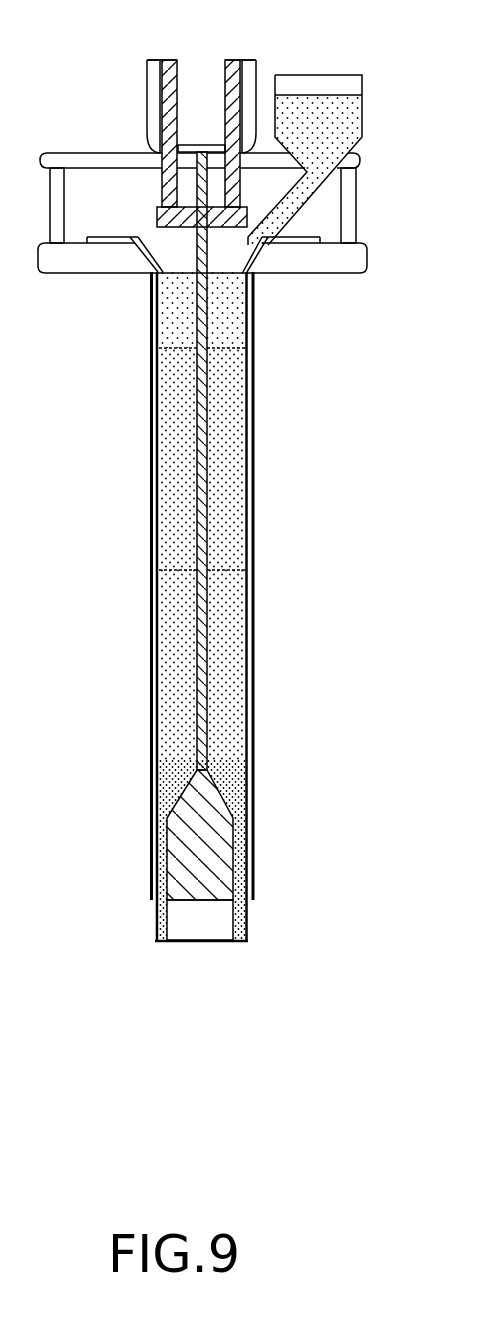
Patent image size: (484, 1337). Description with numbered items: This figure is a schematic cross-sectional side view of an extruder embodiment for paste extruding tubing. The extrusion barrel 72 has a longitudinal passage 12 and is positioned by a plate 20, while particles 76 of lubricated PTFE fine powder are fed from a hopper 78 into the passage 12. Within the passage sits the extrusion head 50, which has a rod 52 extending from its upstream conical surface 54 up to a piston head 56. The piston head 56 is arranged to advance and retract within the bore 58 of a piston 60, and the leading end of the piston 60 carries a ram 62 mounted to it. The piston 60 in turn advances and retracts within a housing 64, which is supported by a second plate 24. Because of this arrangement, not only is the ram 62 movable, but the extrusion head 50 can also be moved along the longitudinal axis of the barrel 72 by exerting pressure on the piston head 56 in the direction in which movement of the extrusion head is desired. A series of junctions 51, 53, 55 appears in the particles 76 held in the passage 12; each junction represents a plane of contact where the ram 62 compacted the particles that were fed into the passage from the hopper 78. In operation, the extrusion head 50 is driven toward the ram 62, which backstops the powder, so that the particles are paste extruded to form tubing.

The longitudinal passage 12 is at (240, 436).
The plate 20 is at (72, 273).
The plate 24 is at (72, 152).
The extrusion head 50 is at (215, 876).
The junction 51 is at (223, 763).
The rod 52 is at (207, 648).
The junction 53 is at (228, 571).
The upstream conical surface 54 is at (158, 793).
The junction 55 is at (223, 348).
The piston head 56 is at (213, 145).
The bore 58 is at (181, 80).
The piston 60 is at (163, 82).
The ram 62 is at (157, 217).
The housing 64 is at (258, 60).
The extrusion barrel 72 is at (255, 390).
The particles 76 is at (342, 118).
The hopper 78 is at (362, 128).